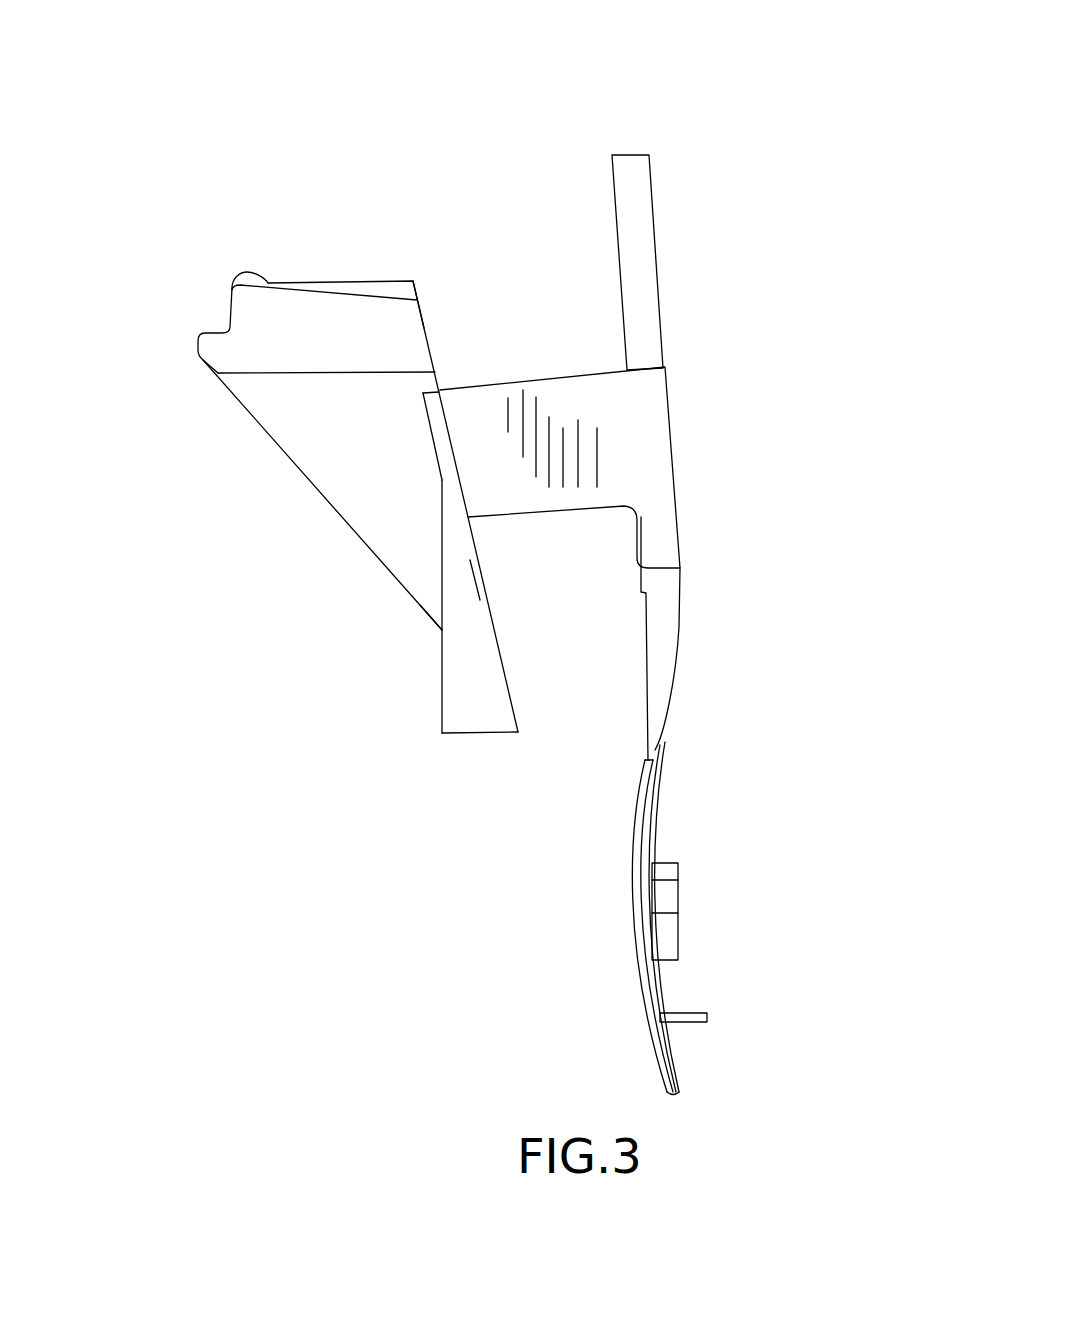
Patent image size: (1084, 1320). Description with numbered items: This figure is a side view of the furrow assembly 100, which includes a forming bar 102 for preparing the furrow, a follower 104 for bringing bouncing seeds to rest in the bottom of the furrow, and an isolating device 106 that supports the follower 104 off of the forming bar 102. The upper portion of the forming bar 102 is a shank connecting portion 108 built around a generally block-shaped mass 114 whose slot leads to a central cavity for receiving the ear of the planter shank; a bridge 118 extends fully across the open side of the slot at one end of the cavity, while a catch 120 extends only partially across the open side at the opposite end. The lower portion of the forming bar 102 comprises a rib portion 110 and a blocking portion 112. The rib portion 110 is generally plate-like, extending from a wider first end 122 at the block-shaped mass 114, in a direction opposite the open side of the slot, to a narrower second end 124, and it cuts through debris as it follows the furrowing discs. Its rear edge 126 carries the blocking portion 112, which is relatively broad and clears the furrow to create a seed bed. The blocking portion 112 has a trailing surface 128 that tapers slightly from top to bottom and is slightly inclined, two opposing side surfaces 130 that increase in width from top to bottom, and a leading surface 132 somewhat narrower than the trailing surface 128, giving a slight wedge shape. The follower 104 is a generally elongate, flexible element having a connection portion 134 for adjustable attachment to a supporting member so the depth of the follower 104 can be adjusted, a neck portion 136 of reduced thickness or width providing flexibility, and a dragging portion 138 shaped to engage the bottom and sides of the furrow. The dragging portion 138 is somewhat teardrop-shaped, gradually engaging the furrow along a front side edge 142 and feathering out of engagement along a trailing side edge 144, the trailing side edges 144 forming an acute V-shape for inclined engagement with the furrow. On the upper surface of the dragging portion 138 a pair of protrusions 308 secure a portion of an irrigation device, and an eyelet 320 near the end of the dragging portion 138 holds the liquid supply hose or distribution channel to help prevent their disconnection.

The furrow assembly 100 is at (741, 119).
The forming bar 102 is at (344, 617).
The follower 104 is at (720, 666).
The isolating device 106 is at (569, 339).
The shank connecting portion 108 is at (333, 265).
The rib portion 110 is at (316, 505).
The blocking portion 112 is at (427, 725).
The block-shaped mass 114 is at (258, 335).
The bridge 118 is at (245, 272).
The catch 120 is at (410, 278).
The first end 122 is at (315, 388).
The second end 124 is at (430, 610).
The rear edge 126 is at (428, 458).
The trailing surface 128 is at (482, 582).
The side surfaces 130 is at (475, 700).
The leading surface 132 is at (440, 673).
The connection portion 134 is at (652, 340).
The neck portion 136 is at (655, 750).
The dragging portion 138 is at (653, 843).
The front side edge 142 is at (642, 810).
The trailing side edge 144 is at (643, 993).
The protrusions 308 is at (678, 902).
The eyelet 320 is at (707, 1017).